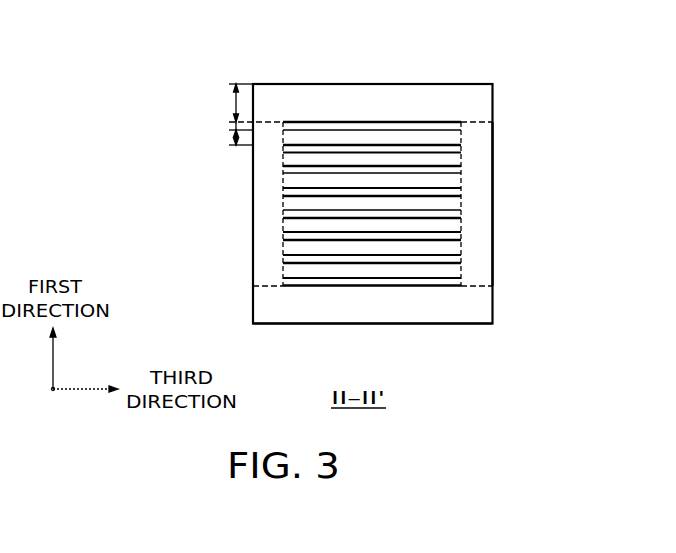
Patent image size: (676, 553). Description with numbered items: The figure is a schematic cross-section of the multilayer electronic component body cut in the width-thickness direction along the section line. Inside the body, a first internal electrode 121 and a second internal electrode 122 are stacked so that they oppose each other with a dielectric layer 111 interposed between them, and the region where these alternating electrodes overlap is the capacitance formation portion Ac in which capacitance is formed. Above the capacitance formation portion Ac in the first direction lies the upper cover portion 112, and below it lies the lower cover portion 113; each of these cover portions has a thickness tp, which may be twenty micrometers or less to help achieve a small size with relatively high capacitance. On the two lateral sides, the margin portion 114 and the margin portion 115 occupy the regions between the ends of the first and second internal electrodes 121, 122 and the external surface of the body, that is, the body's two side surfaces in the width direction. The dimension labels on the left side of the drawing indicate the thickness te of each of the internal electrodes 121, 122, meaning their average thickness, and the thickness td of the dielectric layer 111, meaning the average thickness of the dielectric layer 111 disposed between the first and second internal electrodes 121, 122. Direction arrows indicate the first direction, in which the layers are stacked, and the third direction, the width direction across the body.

The upper cover portion 112 is at (379, 103).
The first internal electrode 121 is at (461, 123).
The dielectric layer 111 is at (458, 135).
The second internal electrode 122 is at (458, 148).
The margin portion 114 is at (268, 240).
The margin portion 115 is at (485, 230).
The lower cover portion 113 is at (485, 305).
The capacitance formation portion Ac is at (283, 205).
The thickness of cover portion tp is at (230, 103).
The thickness of internal electrode te is at (229, 125).
The thickness of dielectric layer td is at (229, 137).